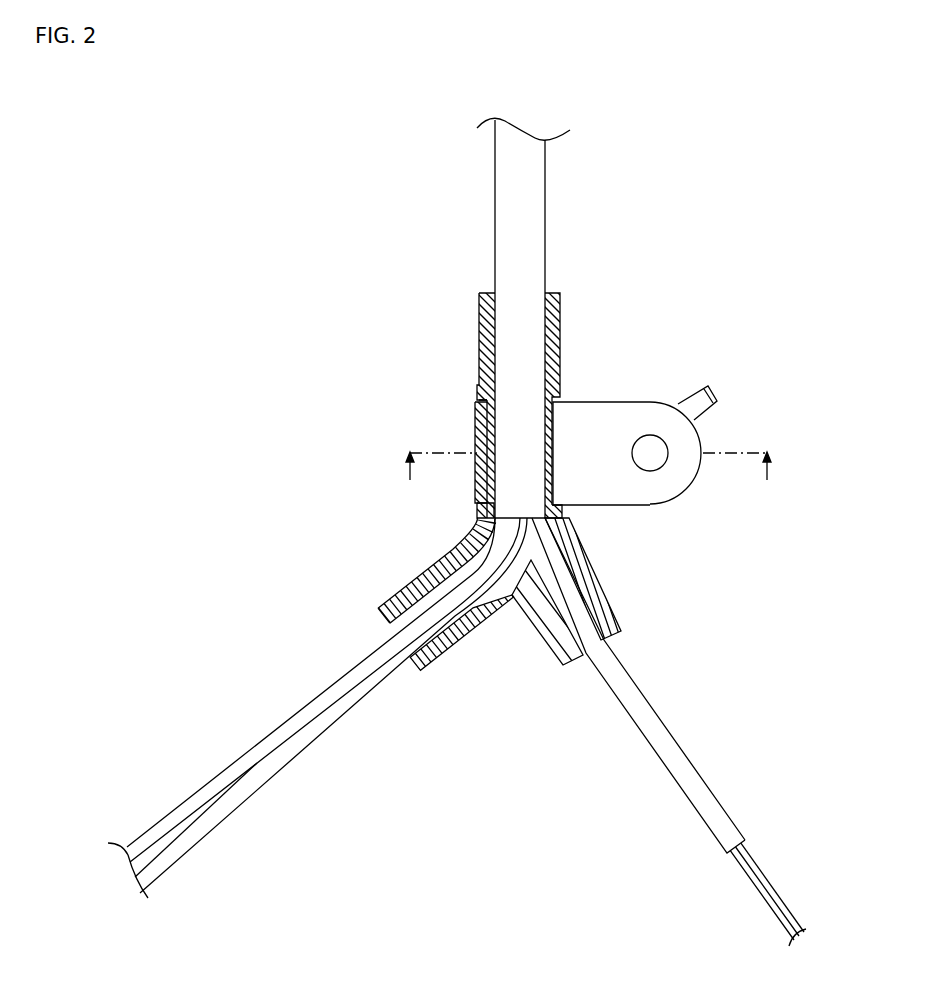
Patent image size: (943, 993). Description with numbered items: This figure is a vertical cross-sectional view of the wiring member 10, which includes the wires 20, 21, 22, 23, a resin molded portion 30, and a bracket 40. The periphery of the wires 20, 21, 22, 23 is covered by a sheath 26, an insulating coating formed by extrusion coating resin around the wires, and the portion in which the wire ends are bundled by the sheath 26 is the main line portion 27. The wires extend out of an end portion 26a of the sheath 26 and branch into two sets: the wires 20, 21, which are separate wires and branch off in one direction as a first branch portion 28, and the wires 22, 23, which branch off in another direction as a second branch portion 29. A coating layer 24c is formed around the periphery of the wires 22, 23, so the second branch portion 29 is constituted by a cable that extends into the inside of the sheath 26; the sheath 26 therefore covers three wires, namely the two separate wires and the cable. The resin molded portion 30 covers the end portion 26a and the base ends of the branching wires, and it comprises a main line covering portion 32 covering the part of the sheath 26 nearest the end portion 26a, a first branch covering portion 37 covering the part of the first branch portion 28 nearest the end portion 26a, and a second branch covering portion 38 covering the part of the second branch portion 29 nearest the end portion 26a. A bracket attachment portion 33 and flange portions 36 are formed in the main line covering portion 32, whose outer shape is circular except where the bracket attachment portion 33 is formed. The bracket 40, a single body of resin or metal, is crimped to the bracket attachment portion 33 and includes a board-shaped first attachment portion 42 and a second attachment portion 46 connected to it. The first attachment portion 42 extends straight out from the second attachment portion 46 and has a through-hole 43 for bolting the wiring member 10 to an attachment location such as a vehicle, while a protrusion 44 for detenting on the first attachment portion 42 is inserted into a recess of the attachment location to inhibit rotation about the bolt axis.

The wiring member 10 is at (357, 177).
The wire 20 is at (200, 797).
The wire 21 is at (232, 800).
The wire 22 is at (784, 905).
The wire 23 is at (790, 925).
The coating layer 24c is at (683, 768).
The sheath 26 is at (533, 207).
The end portion of the sheath 26a is at (563, 515).
The main line portion 27 is at (494, 206).
The first branch portion 28 is at (273, 731).
The second branch portion 29 is at (687, 804).
The resin molded portion 30 is at (556, 664).
The main line covering portion 32 is at (478, 335).
The bracket attachment portion 33 is at (556, 434).
The flange portion 36 is at (478, 390).
The first branch covering portion 37 is at (456, 650).
The second branch covering portion 38 is at (611, 611).
The bracket 40 is at (660, 435).
The first attachment portion 42 is at (695, 484).
The through-hole 43 is at (647, 460).
The protrusion 44 is at (722, 393).
The second attachment portion 46 is at (478, 420).